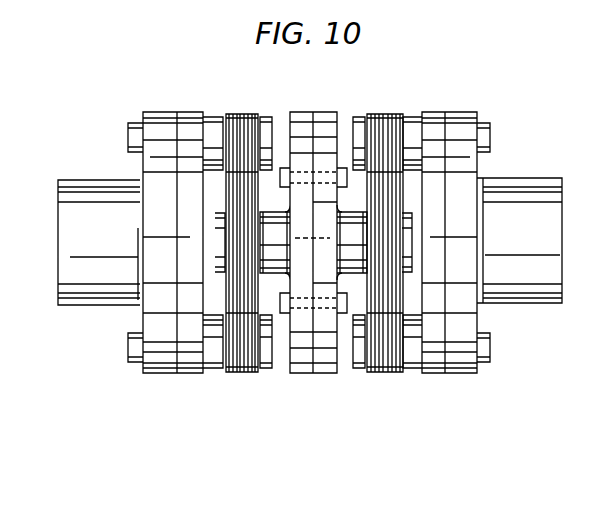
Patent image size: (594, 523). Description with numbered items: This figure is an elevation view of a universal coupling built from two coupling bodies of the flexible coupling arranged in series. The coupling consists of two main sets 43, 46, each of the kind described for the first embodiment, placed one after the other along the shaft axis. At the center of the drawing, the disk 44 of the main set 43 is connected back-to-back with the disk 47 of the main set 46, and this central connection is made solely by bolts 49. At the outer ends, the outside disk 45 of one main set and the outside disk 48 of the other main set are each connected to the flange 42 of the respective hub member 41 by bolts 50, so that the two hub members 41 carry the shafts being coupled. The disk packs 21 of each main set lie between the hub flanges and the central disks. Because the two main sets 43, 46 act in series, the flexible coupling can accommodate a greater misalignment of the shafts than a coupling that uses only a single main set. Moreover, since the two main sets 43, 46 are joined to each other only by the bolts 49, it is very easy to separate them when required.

The hub member 41 is at (80, 307).
The flange 42 is at (165, 373).
The outside disk 45 is at (190, 373).
The outside disk 48 is at (437, 373).
The bolts 50 is at (129, 357).
The disc pack 21 is at (250, 112).
The main set 43 is at (274, 381).
The main set 46 is at (389, 375).
The disk 44 is at (303, 373).
The disk 47 is at (327, 373).
The bolts 49 is at (325, 170).